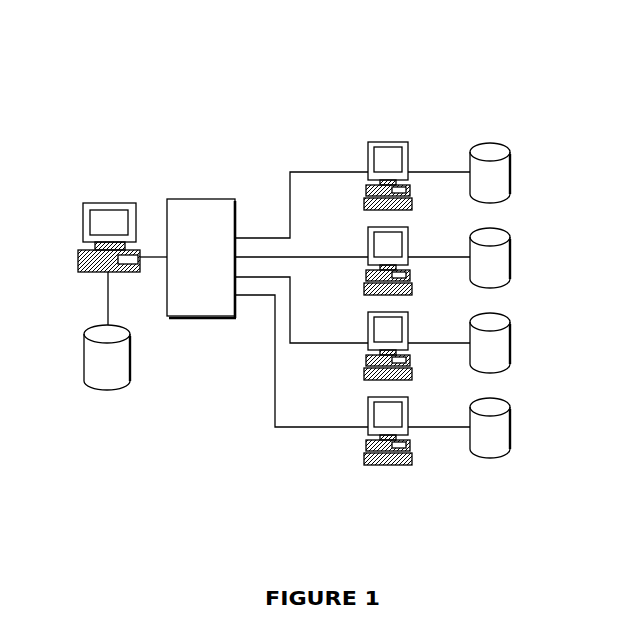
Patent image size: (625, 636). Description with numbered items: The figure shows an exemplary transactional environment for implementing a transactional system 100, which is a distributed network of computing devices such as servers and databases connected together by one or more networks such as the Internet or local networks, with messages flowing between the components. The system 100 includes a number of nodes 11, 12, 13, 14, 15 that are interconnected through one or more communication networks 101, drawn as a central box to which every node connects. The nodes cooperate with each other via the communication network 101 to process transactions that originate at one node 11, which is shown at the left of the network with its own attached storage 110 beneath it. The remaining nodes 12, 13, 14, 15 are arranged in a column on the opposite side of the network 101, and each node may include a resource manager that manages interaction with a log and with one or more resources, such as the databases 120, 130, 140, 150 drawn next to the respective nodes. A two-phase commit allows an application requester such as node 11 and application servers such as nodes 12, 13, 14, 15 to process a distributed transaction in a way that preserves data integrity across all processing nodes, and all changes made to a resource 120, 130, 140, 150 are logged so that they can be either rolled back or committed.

The transactional system 100 is at (127, 98).
The communication network 101 is at (200, 199).
The node 11 is at (75, 261).
The server database 110 is at (128, 355).
The node 12 is at (362, 190).
The node 13 is at (362, 278).
The node 14 is at (362, 365).
The node 15 is at (362, 448).
The database 120 is at (510, 177).
The database 130 is at (510, 262).
The database 140 is at (510, 347).
The database 150 is at (510, 432).